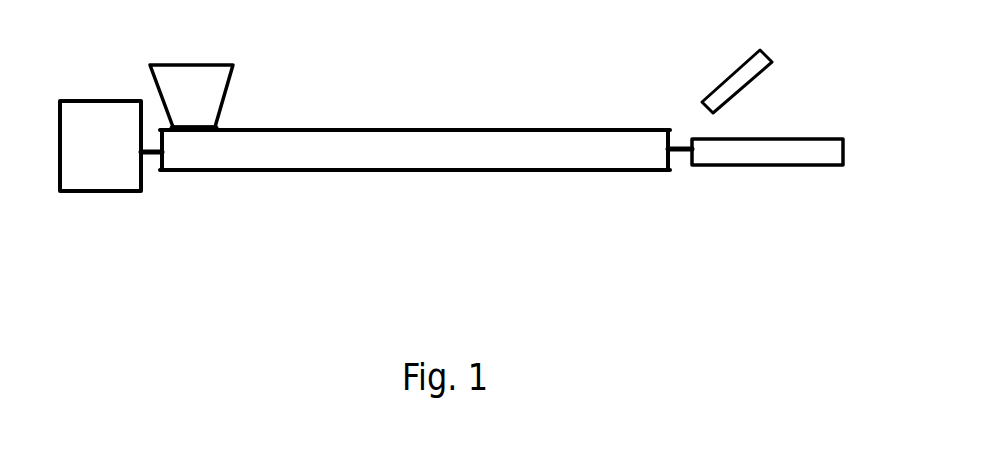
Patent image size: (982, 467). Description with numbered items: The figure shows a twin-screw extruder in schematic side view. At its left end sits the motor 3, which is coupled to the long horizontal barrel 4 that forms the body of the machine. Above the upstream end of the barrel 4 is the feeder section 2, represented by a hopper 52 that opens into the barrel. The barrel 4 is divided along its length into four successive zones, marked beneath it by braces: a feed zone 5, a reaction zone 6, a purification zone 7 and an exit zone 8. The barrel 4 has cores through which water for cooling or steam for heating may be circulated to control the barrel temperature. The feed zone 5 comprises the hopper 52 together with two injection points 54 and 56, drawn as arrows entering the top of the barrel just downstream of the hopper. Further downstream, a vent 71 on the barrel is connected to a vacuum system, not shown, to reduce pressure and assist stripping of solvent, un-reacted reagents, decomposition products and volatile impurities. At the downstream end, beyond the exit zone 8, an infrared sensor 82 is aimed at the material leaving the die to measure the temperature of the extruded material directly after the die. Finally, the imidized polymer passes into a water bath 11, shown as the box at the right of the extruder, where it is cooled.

The feeder section 2 is at (143, 50).
The motor 3 is at (100, 146).
The barrel 4 is at (170, 225).
The feed zone 5 is at (168, 173).
The reaction zone 6 is at (462, 173).
The purification zone 7 is at (597, 173).
The exit zone 8 is at (670, 173).
The water bath 11 is at (695, 170).
The hopper 52 is at (191, 96).
The injection point 54 is at (260, 122).
The injection point 56 is at (308, 122).
The vent 71 is at (547, 128).
The infrared sensor 82 is at (681, 133).